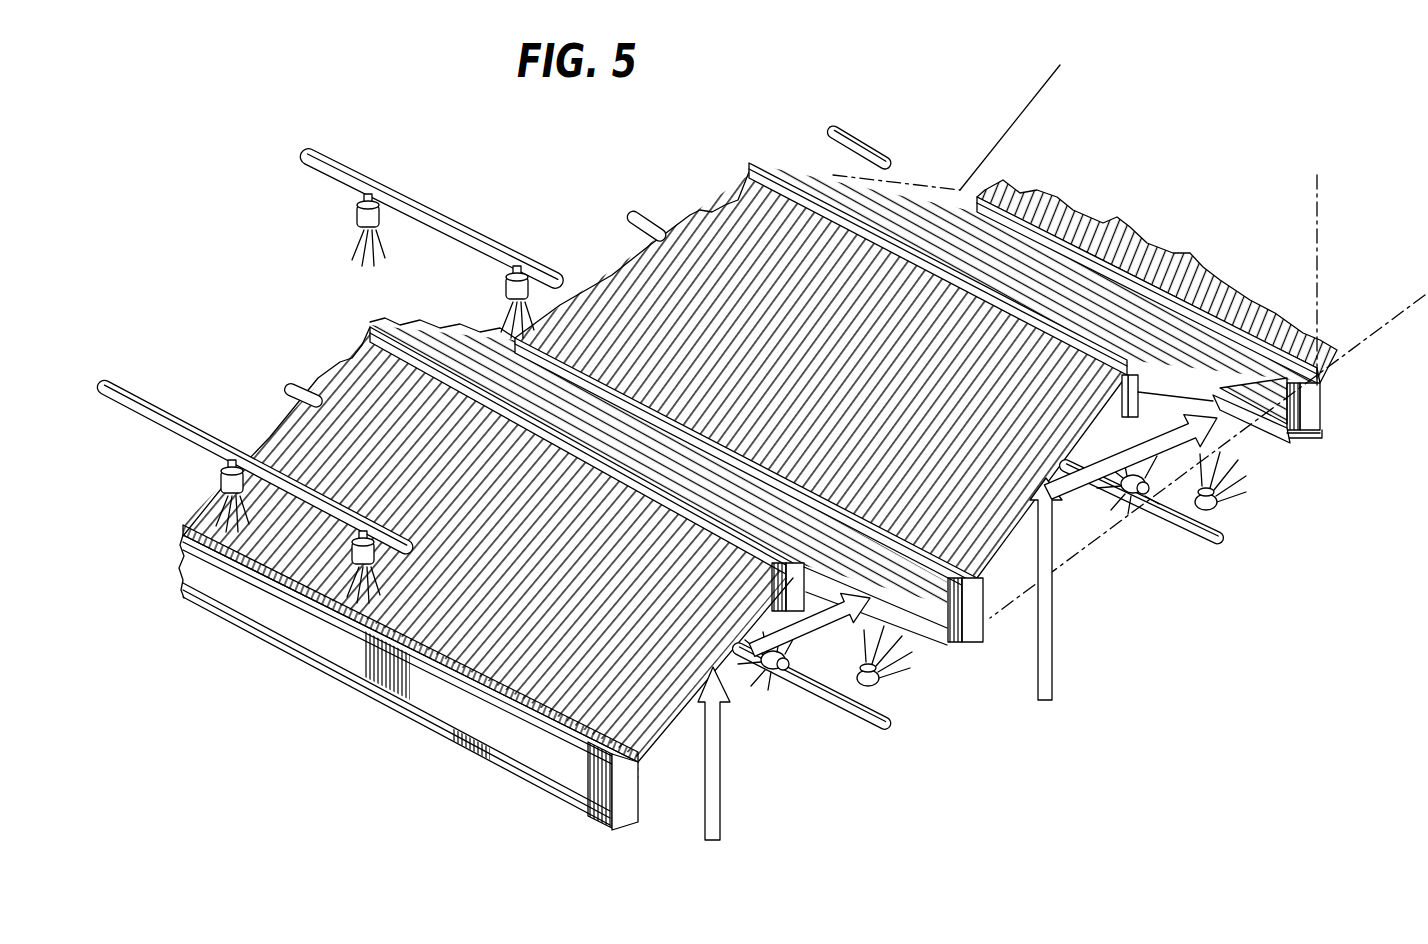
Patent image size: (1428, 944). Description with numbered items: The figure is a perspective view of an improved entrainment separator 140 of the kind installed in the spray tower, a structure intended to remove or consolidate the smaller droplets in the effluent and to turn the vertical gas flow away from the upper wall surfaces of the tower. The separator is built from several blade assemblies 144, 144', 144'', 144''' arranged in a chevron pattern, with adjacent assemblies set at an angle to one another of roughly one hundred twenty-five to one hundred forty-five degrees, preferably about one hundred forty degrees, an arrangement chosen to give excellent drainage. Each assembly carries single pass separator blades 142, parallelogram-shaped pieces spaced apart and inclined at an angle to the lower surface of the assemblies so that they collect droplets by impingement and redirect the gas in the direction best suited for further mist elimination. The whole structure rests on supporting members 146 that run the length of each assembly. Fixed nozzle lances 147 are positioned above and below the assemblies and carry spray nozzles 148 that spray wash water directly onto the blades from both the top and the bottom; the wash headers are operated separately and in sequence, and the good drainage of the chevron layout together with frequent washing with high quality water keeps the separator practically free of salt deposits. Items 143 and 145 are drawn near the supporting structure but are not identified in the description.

The entrainment separator 140 is at (936, 120).
The separator blades 142 is at (668, 712).
The channel member 143 is at (1268, 440).
The blade assembly 144 is at (1043, 230).
The blade assembly 144' is at (821, 349).
The blade assembly 144'' is at (658, 446).
The blade assembly 144''' is at (488, 544).
The support post 145 is at (1282, 435).
The supporting members 146 is at (640, 822).
The fixed nozzle lances 147 is at (345, 163).
The spray nozzles 148 is at (357, 217).